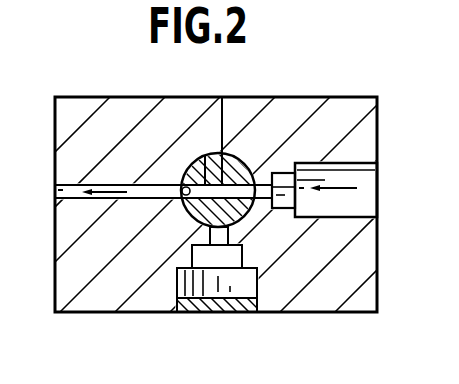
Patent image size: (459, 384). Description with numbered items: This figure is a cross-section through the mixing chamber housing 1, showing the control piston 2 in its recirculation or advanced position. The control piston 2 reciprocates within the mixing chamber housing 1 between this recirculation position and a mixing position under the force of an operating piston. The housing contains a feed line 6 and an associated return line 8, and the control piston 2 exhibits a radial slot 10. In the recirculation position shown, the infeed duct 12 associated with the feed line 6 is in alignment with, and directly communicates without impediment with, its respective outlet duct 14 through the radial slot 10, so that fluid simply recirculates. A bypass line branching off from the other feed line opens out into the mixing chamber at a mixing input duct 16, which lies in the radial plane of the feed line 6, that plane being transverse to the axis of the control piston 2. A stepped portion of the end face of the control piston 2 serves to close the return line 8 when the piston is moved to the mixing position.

The mixing chamber housing 1 is at (120, 293).
The control piston 2 is at (205, 153).
The feed line 6 is at (365, 172).
The return line 8 is at (56, 199).
The radial slot 10 is at (222, 97).
The infeed duct 12 is at (249, 169).
The outlet duct 14 is at (183, 185).
The mixing input duct 16 is at (239, 245).